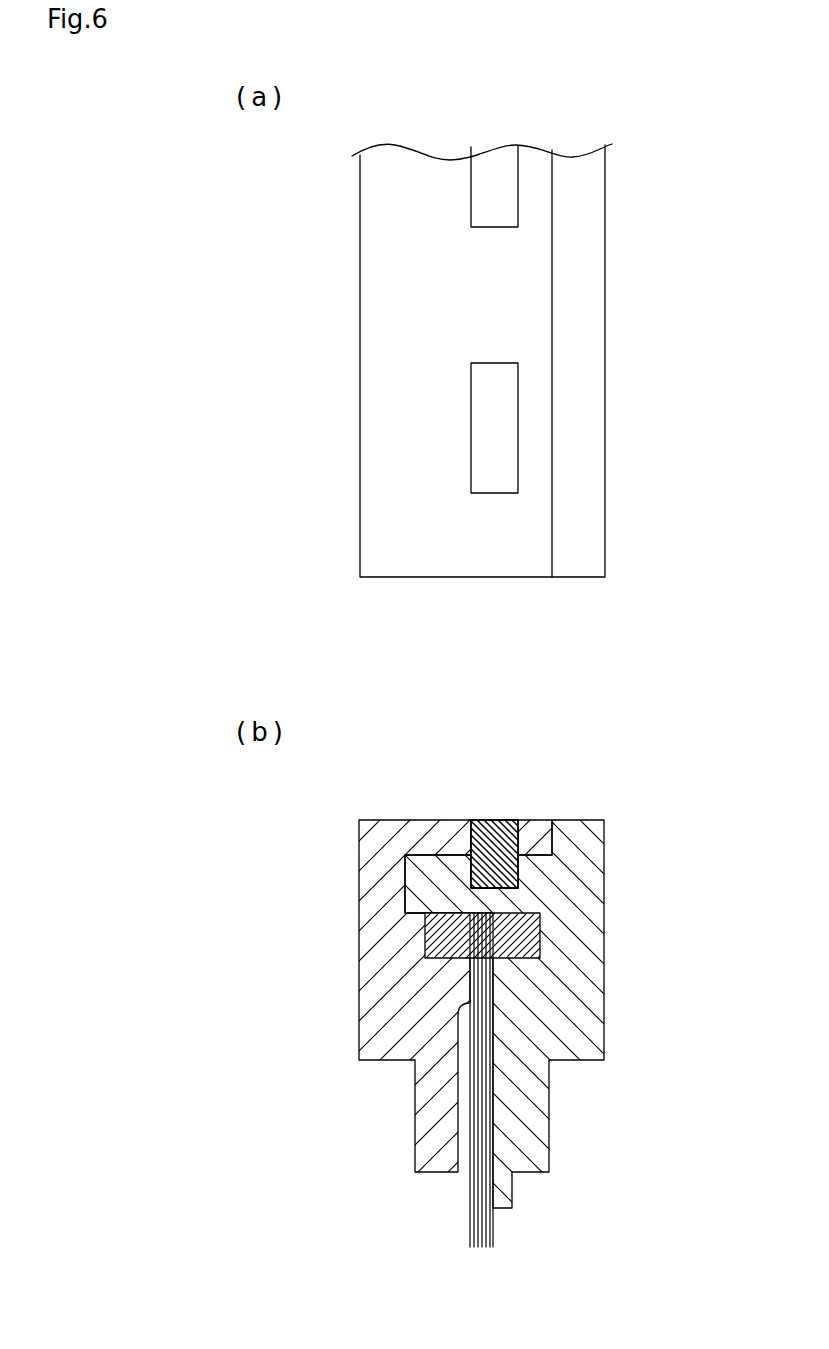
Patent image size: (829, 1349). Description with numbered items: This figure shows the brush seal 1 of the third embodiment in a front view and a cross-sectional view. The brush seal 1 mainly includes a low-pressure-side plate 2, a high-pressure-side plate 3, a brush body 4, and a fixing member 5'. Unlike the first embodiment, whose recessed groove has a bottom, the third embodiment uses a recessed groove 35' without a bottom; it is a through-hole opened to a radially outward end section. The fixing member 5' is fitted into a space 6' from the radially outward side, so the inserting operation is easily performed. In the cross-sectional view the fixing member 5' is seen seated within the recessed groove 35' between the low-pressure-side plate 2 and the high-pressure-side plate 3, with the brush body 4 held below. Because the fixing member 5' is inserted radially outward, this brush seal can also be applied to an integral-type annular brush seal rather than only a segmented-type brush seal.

The brush seal 1 is at (600, 786).
The low-pressure-side plate 2 is at (577, 492).
The high-pressure-side plate 3 is at (380, 500).
The brush body 4 is at (500, 1010).
The fixing member 5' is at (575, 517).
The recessed groove 35' is at (381, 537).
The space 6' is at (498, 790).